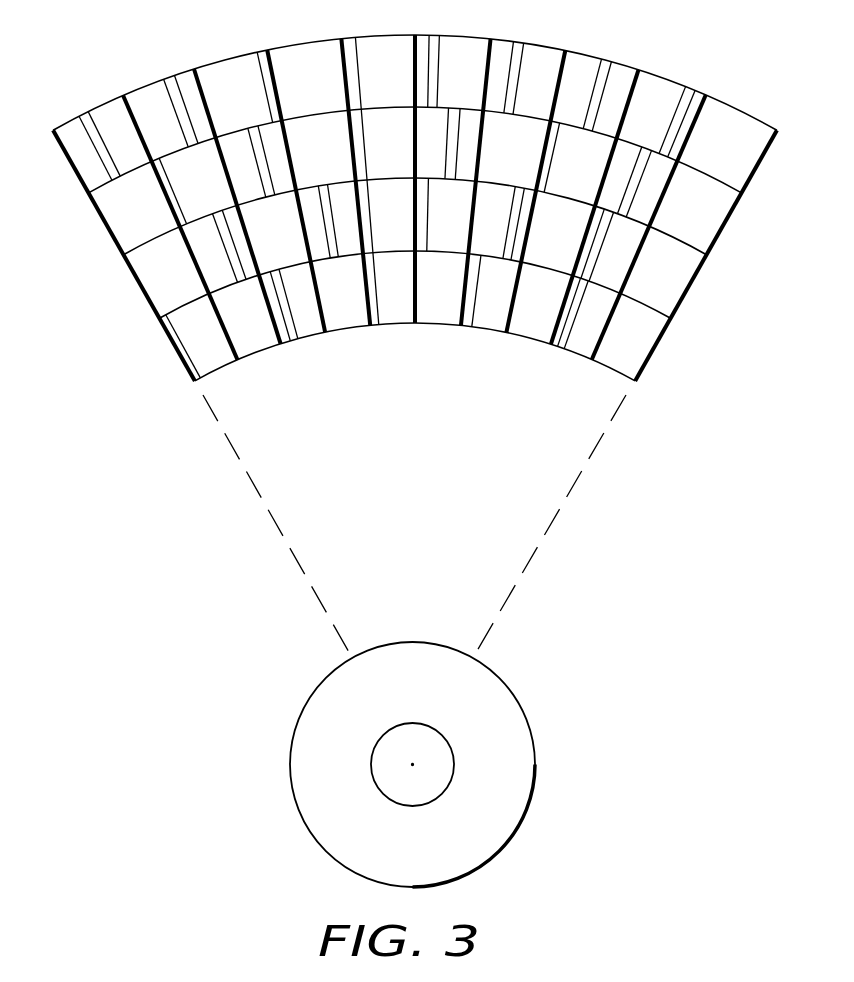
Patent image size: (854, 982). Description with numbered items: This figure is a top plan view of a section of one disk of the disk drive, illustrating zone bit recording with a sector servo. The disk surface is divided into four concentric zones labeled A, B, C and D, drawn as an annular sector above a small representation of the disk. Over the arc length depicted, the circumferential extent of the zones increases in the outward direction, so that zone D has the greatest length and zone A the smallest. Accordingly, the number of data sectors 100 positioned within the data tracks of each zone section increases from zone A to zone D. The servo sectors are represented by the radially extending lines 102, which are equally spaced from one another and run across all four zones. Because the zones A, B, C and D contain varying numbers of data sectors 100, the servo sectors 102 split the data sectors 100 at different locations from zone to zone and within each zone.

The data sectors 100 is at (411, 189).
The servo sectors 102 is at (415, 203).
The zone A is at (387, 355).
The zone B is at (387, 285).
The zone C is at (388, 217).
The zone D is at (409, 116).